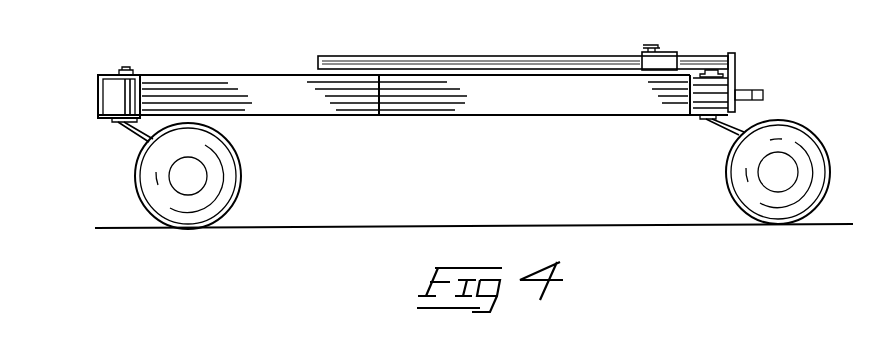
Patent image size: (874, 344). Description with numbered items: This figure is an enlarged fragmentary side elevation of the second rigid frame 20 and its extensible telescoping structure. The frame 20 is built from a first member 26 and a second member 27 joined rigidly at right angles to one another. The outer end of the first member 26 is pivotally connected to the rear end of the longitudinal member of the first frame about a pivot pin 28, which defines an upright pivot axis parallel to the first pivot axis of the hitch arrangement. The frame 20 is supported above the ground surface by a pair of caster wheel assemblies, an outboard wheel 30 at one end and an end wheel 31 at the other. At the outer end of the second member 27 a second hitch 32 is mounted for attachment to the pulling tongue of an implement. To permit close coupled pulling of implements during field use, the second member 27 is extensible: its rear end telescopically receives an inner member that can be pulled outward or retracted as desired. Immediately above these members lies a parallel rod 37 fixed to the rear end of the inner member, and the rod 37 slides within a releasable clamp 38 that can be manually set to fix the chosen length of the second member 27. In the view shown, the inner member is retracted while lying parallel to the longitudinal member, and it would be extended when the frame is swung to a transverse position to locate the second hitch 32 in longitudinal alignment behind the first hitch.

The second rigid frame 20 is at (215, 75).
The first member 26 is at (105, 74).
The second member 27 is at (518, 115).
The pivot pin 28 is at (697, 113).
The outboard wheel 30 is at (225, 217).
The end wheel 31 is at (793, 225).
The second hitch 32 is at (753, 90).
The parallel rod 37 is at (540, 57).
The releasable clamp 38 is at (663, 52).